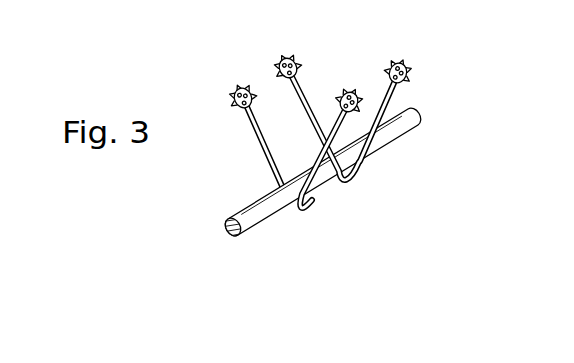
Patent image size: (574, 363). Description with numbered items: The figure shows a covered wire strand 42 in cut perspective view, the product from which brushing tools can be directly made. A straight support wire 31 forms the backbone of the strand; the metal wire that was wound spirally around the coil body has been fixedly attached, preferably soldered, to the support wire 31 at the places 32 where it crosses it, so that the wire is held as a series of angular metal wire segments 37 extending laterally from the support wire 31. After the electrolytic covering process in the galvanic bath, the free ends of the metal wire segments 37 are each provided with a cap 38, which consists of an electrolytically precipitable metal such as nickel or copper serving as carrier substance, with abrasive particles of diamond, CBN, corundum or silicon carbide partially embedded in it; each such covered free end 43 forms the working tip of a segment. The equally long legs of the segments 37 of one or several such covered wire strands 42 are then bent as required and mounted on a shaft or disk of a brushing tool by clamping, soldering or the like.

The support wire 31 is at (291, 191).
The places where the metal wire crosses the support wire 32 is at (333, 178).
The metal wire segments 37 is at (293, 175).
The cap 38 is at (268, 56).
The covered wire strand 42 is at (219, 227).
The spiked head 43 is at (335, 77).